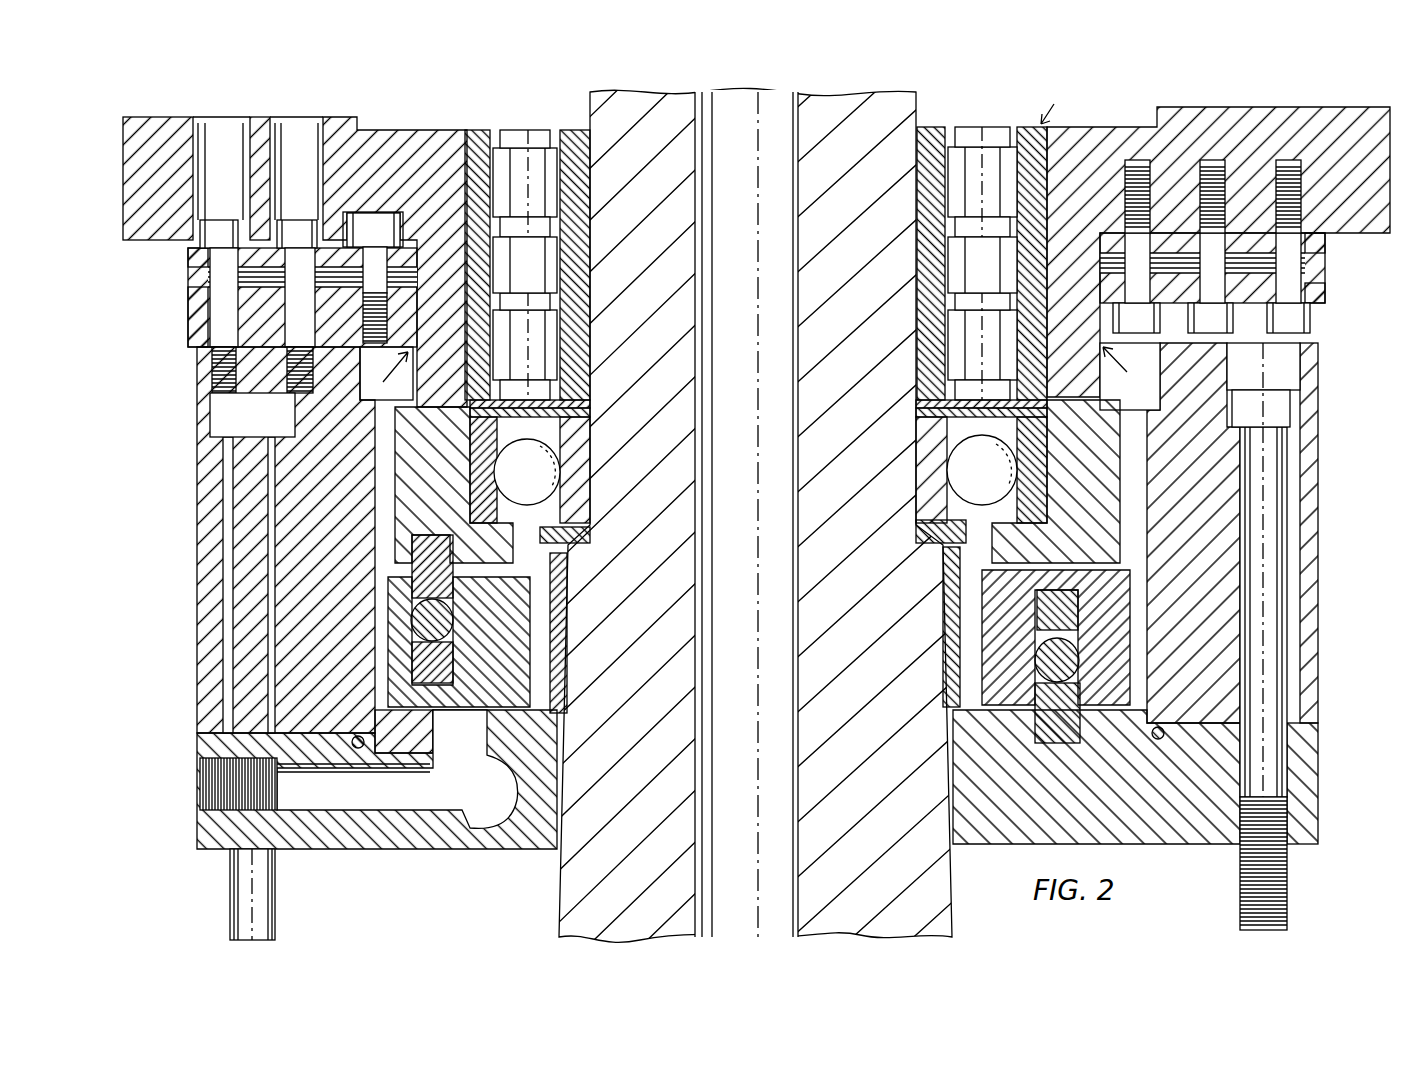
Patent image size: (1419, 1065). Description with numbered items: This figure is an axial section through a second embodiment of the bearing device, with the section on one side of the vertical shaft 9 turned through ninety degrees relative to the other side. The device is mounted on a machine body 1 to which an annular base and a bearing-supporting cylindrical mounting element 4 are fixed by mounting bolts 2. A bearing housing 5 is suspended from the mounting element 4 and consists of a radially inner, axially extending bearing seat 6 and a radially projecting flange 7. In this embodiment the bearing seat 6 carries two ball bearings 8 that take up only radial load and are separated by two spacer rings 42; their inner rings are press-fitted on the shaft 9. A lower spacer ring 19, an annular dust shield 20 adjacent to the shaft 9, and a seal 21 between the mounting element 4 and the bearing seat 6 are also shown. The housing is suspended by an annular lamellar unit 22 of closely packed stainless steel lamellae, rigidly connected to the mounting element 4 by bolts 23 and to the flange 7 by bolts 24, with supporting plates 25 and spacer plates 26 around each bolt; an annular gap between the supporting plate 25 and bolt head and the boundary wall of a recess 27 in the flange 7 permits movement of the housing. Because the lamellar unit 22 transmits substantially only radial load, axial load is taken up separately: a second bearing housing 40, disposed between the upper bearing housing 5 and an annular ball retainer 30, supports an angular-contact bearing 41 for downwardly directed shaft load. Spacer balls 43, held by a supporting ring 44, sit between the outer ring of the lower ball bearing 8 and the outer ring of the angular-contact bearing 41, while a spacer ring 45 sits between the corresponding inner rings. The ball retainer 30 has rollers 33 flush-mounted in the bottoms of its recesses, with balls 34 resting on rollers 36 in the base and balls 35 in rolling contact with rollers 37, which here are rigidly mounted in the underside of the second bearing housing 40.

The machine body 1 is at (198, 826).
The mounting bolts 2 is at (231, 894).
The mounting element 4 is at (196, 533).
The bearing housing 5 is at (1058, 104).
The bearing seat 6 is at (1130, 376).
The flange 7 is at (1380, 152).
The ball bearings 8 is at (922, 190).
The vertical shaft 9 is at (903, 98).
The lower spacer ring 19 is at (918, 536).
The annular dust shield 20 is at (942, 610).
The seal 21 is at (1150, 377).
The lamellar unit 22 is at (188, 290).
The bolts 23 is at (222, 226).
The bolts 24 is at (1254, 157).
The supporting plates 25 is at (188, 258).
The spacer plates 26 is at (190, 326).
The recess 27 is at (205, 122).
The ball retainer 30 is at (516, 656).
The roller 33 is at (471, 691).
The balls 34 is at (1030, 682).
The balls 35 is at (460, 616).
The rollers 36 is at (1036, 740).
The rollers 37 is at (564, 550).
The second bearing housing 40 is at (1110, 471).
The angular-contact bearing 41 is at (583, 476).
The spacer rings 42 is at (928, 260).
The spacer balls 43 is at (577, 402).
The supporting ring 44 is at (581, 414).
The spacer ring 45 is at (916, 406).